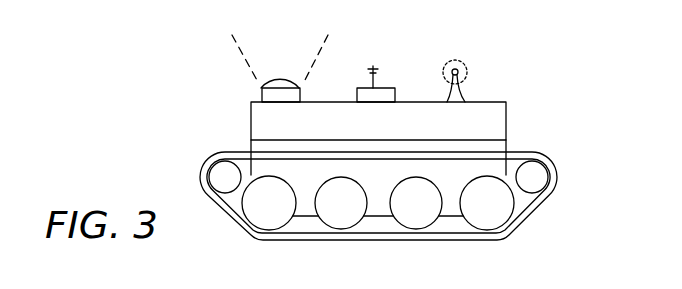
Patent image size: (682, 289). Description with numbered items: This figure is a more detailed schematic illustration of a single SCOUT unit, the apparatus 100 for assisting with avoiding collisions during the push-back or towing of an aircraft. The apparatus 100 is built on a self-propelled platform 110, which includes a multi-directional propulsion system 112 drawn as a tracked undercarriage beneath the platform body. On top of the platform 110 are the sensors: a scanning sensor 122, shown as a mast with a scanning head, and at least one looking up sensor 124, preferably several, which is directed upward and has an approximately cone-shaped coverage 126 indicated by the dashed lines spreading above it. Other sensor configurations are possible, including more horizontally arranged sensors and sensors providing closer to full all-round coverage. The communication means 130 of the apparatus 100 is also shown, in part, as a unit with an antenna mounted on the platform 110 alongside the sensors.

The apparatus 100 is at (110, 53).
The platform 110 is at (507, 112).
The multi-directional propulsion system 112 is at (557, 163).
The scanning sensor 122 is at (457, 63).
The looking up sensor 124 is at (262, 90).
The cone-shaped coverage 126 is at (298, 34).
The communication means 130 is at (395, 88).